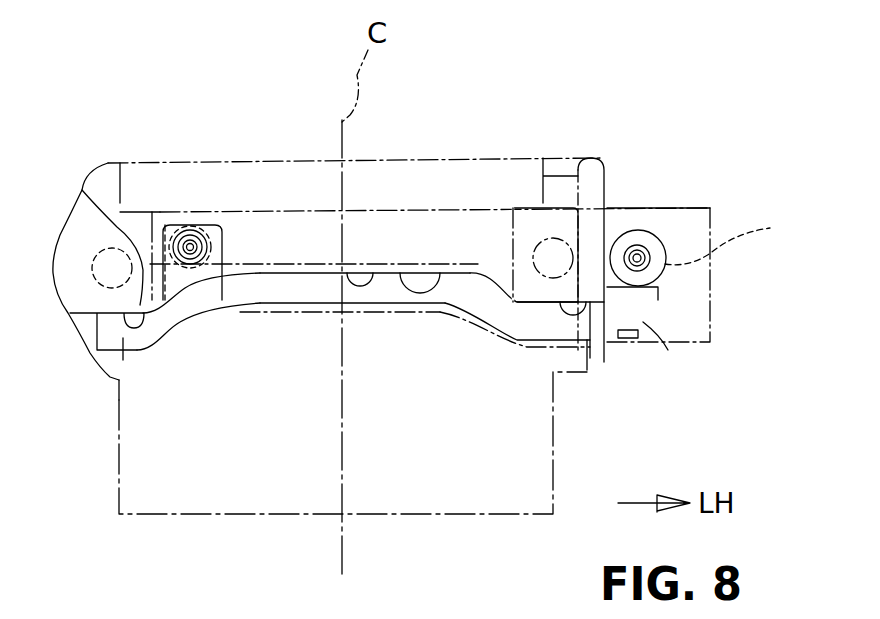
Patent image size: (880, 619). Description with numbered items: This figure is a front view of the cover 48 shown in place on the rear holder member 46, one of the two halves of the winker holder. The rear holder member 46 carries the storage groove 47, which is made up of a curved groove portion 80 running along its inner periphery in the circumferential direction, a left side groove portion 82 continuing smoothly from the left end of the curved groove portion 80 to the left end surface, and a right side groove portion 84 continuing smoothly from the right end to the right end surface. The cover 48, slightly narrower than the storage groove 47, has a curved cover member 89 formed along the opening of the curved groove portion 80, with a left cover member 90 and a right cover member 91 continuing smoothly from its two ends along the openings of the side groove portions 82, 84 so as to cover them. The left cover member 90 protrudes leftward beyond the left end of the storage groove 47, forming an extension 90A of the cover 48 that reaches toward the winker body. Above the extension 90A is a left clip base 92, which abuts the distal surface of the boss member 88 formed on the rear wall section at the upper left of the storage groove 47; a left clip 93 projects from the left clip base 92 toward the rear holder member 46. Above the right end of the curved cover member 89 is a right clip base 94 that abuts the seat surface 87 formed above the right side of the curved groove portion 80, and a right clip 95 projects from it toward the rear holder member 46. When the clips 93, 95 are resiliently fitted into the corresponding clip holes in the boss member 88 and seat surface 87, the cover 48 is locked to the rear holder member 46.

The rear holder member 46 is at (529, 155).
The storage groove 47 is at (447, 245).
The cover 48 is at (473, 266).
The curved groove portion 80 is at (377, 285).
The left side groove portion 82 is at (581, 160).
The right side groove portion 84 is at (82, 190).
The seat surface 87 is at (167, 230).
The boss member 88 is at (655, 233).
The curved cover member 89 is at (310, 283).
The left cover member 90 is at (587, 372).
The extension 90A is at (668, 350).
The right cover member 91 is at (112, 378).
The left clip base 92 is at (653, 277).
The left clip 93 is at (734, 238).
The right clip base 94 is at (245, 237).
The right clip 95 is at (210, 227).